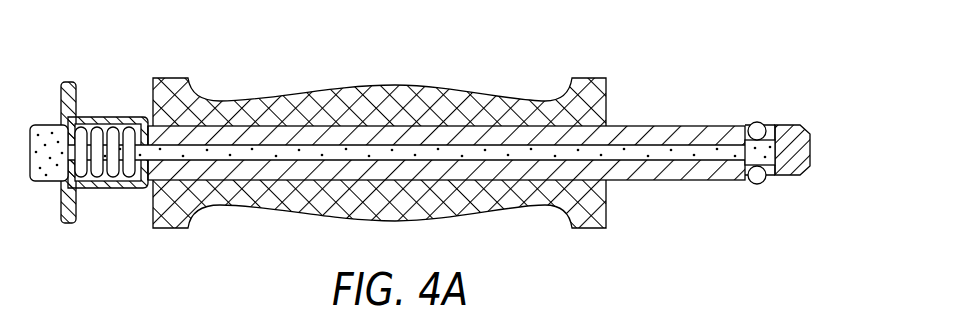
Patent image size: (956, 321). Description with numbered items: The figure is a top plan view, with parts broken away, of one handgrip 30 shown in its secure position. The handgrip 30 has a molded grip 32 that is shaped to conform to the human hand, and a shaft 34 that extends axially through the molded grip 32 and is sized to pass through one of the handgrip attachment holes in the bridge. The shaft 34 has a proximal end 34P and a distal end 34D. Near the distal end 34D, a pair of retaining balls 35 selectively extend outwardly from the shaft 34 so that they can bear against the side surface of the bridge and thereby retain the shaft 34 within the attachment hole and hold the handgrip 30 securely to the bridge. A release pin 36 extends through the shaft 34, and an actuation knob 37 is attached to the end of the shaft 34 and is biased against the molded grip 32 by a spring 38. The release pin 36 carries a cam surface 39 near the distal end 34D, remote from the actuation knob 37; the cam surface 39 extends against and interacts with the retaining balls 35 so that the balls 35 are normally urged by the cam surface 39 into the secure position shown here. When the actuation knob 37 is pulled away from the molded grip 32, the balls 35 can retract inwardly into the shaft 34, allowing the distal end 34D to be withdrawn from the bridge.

The handgrip 30 is at (379, 135).
The molded grip 32 is at (272, 96).
The shaft 34 is at (650, 127).
The proximal end 34P is at (152, 195).
The distal end 34D is at (753, 160).
The retaining balls 35 is at (757, 122).
The release pin 36 is at (650, 168).
The actuation knob 37 is at (75, 83).
The spring 38 is at (97, 128).
The cam surface 39 is at (745, 176).